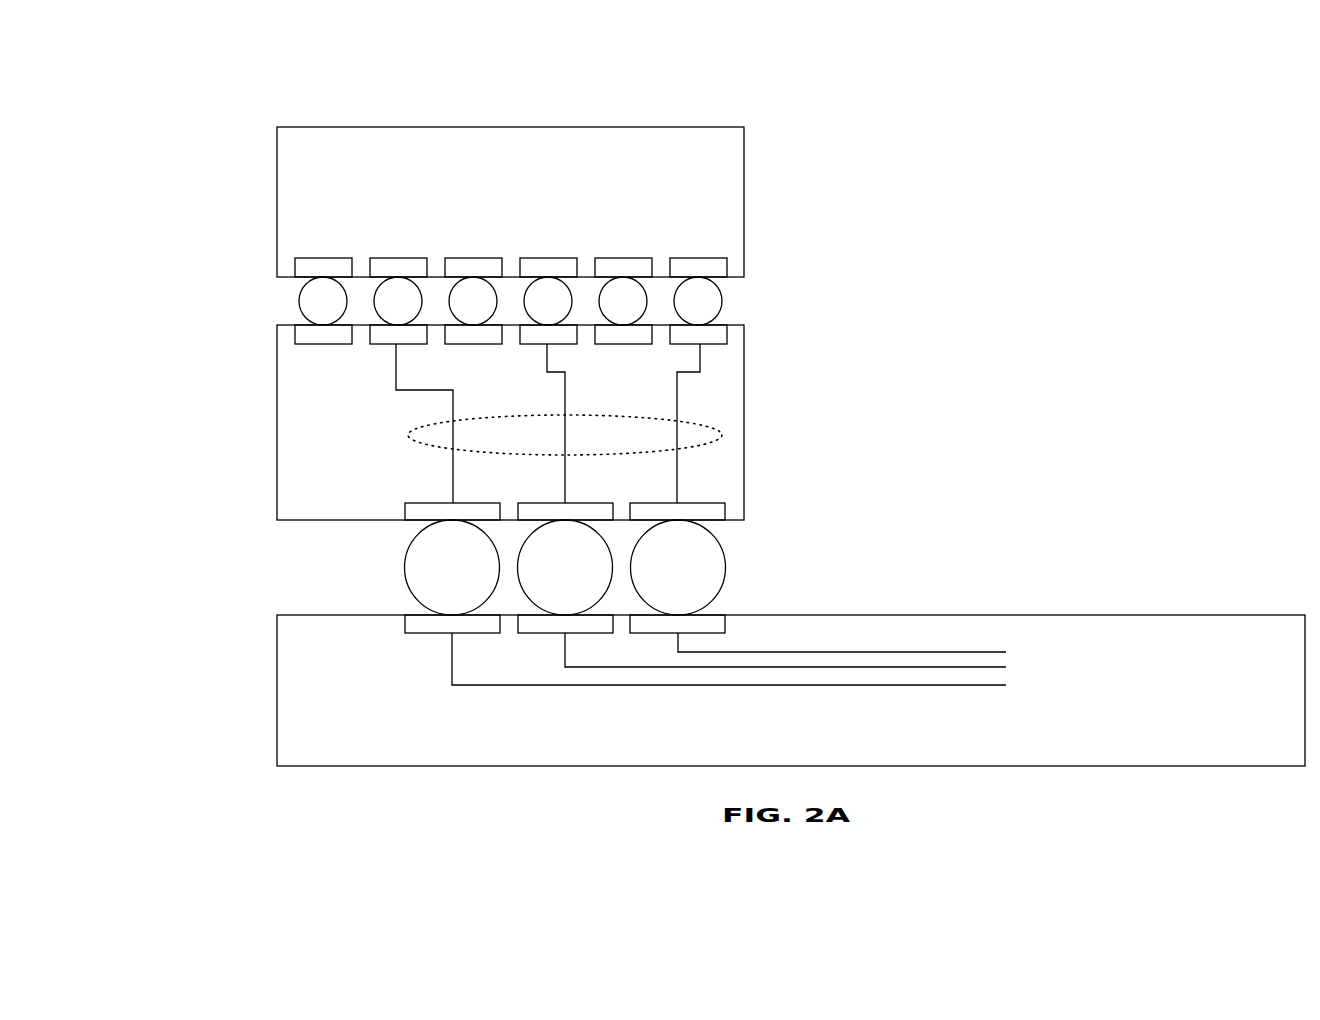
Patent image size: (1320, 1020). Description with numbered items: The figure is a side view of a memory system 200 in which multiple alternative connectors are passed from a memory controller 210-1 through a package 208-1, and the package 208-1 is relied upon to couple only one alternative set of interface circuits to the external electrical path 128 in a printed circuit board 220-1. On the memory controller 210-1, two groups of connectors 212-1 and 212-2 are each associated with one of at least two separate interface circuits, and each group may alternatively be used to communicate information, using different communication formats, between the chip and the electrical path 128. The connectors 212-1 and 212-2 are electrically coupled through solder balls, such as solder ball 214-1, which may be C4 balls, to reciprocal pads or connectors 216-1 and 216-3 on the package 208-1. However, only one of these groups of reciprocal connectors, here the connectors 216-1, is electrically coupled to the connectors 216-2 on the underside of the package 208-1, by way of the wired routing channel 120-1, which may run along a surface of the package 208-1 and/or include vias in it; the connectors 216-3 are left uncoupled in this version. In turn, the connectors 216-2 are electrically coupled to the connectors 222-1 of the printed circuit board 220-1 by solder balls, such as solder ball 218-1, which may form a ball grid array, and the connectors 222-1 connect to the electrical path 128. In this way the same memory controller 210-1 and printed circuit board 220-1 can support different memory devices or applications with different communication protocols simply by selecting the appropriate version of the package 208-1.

The memory system 200 is at (1050, 157).
The memory controller 210-1 is at (533, 224).
The connectors 212-1 is at (618, 268).
The connectors 212-2 is at (397, 268).
The solder ball 214-1 is at (700, 299).
The package 208-1 is at (331, 446).
The connectors 216-3 is at (618, 335).
The connectors 216-1 is at (400, 335).
The routing channel 120-1 is at (713, 442).
The connectors 216-2 is at (678, 512).
The solder ball 218-1 is at (678, 568).
The printed circuit board 220-1 is at (813, 752).
The connectors 222-1 is at (678, 626).
The electrical path 128 is at (1012, 687).